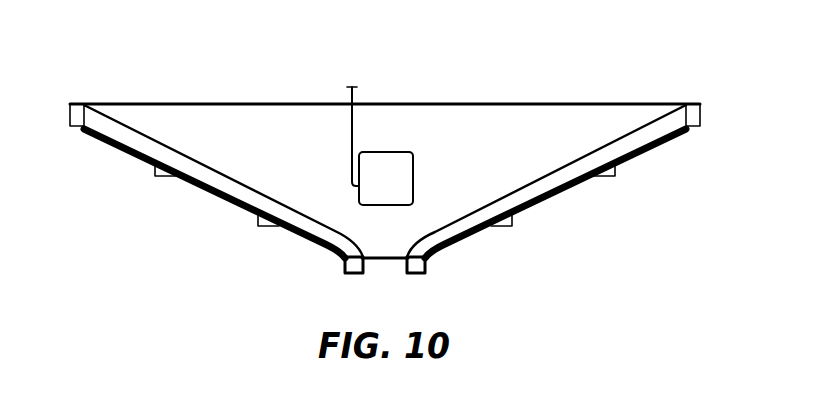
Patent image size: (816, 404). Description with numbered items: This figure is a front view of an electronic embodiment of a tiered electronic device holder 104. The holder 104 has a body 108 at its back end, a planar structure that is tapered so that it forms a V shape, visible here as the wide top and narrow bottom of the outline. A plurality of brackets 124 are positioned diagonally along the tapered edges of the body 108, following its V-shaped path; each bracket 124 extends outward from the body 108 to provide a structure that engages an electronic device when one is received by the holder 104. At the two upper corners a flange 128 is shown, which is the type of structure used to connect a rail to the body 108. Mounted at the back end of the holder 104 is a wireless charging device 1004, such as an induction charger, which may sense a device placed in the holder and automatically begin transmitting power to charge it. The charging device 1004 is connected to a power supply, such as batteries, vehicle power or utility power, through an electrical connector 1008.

The tiered electronic device holder 104 is at (386, 66).
The body 108 is at (317, 166).
The brackets 124 is at (163, 177).
The flange 128 is at (69, 114).
The wireless charging device 1004 is at (393, 151).
The electrical connector 1008 is at (350, 117).